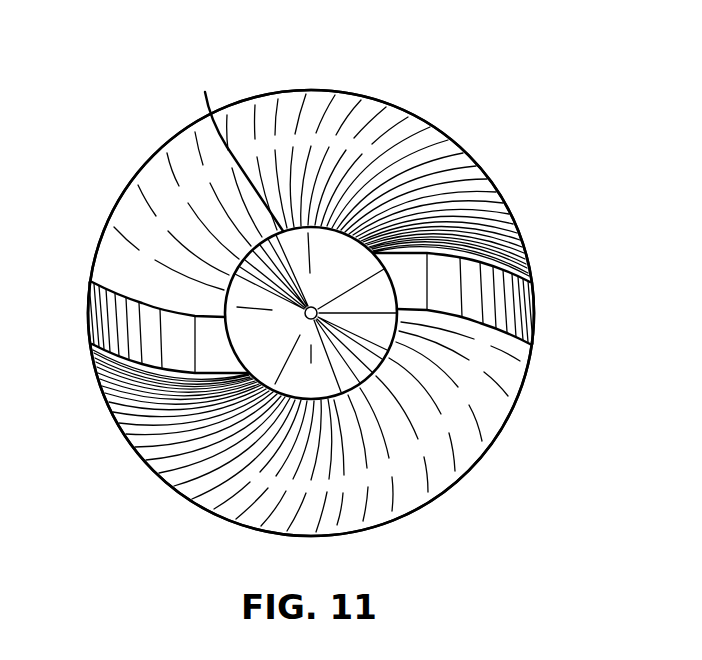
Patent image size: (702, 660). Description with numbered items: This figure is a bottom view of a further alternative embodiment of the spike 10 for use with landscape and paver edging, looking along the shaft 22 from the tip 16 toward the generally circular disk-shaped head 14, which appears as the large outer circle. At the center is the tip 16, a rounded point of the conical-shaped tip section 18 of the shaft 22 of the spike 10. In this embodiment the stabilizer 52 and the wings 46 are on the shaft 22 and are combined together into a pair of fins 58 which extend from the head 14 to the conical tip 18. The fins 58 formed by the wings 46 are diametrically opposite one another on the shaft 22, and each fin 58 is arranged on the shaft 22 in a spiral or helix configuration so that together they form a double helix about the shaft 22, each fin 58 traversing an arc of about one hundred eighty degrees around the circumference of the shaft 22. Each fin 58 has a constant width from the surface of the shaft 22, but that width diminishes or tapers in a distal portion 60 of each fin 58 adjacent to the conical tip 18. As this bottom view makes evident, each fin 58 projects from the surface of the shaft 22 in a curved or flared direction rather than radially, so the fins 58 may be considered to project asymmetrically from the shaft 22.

The spike 10 is at (128, 64).
The head 14 is at (438, 128).
The tip 16 is at (316, 307).
The conical-shaped tip section 18 is at (250, 347).
The shaft 22 is at (236, 148).
The wings 46 is at (156, 159).
The stabilizer 52 is at (514, 272).
The fins 58 is at (464, 146).
The distal portion 60 is at (516, 346).